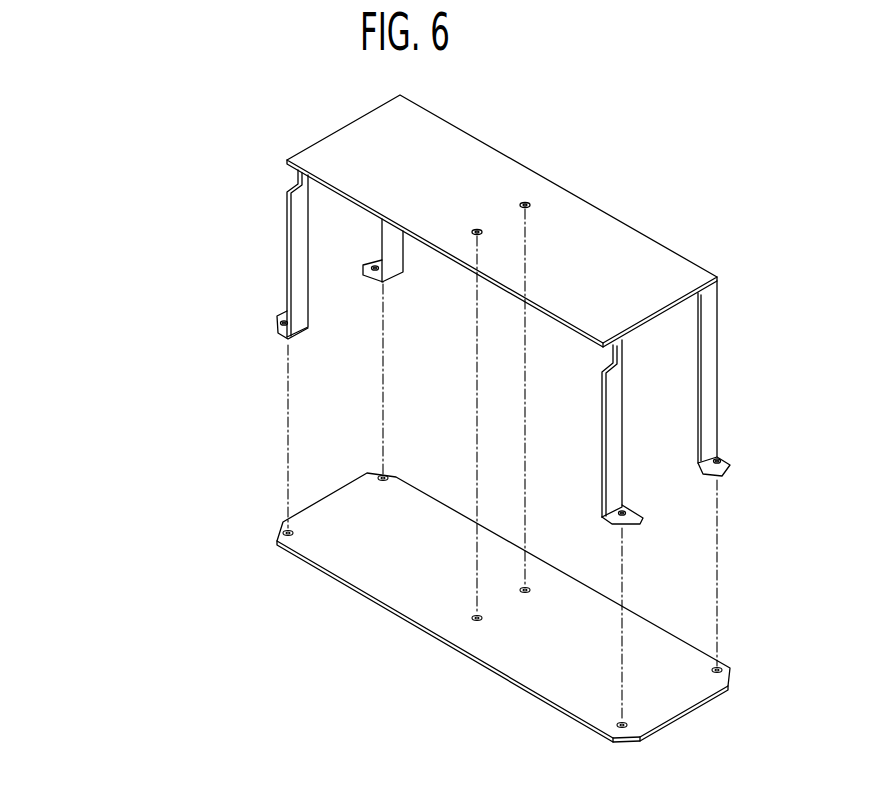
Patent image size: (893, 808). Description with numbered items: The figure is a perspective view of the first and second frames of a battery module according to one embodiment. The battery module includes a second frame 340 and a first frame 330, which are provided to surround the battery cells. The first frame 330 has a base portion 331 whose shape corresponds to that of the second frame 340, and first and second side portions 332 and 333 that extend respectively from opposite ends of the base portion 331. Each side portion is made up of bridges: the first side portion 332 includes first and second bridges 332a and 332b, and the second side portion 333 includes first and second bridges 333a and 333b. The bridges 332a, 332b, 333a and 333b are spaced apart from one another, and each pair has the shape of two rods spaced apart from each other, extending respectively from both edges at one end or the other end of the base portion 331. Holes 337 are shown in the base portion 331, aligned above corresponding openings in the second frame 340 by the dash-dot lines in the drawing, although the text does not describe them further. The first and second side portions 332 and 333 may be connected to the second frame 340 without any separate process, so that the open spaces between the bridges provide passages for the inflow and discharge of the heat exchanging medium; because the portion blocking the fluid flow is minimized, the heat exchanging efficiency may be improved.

The first frame 330 is at (100, 242).
The base portion 331 is at (458, 237).
The first side portion 332 is at (149, 373).
The first bridge 332a is at (615, 407).
The second bridge 332b is at (707, 440).
The second side portion 333 is at (160, 215).
The first bridge 333a is at (293, 297).
The second bridge 333b is at (392, 245).
The fastening holes 337 is at (477, 229).
The second frame 340 is at (478, 659).